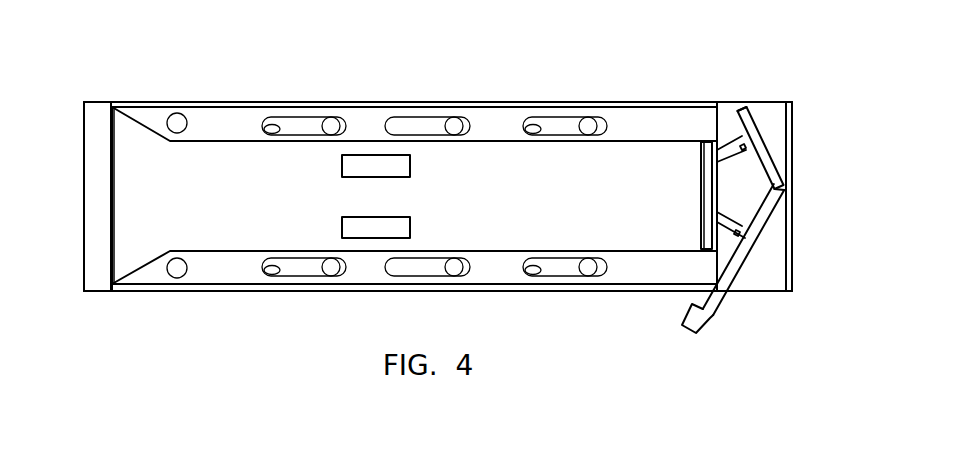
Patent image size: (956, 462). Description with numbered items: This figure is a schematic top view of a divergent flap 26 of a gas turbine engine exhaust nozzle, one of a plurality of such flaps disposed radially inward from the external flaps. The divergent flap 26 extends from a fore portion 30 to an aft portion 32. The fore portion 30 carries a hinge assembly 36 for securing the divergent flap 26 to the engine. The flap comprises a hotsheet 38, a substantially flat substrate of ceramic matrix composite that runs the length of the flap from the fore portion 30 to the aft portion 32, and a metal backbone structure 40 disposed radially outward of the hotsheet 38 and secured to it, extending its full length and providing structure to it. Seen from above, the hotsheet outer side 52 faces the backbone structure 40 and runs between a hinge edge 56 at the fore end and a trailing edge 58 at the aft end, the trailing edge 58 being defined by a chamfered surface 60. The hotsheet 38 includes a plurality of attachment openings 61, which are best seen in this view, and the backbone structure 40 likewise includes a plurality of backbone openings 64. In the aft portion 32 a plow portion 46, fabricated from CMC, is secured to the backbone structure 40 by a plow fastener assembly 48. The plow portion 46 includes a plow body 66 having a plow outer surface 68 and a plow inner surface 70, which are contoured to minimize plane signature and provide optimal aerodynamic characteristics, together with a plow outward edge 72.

The divergent flap 26 is at (495, 80).
The fore portion 30 is at (99, 309).
The aft portion 32 is at (704, 337).
The hinge assembly 36 is at (90, 167).
The hotsheet 38 is at (295, 293).
The backbone structure 40 is at (630, 152).
The plow portion 46 is at (783, 125).
The plow fastener assembly 48 is at (738, 210).
The hotsheet outer side 52 is at (370, 288).
The hinge edge 56 is at (120, 292).
The trailing edge 58 is at (786, 292).
The chamfered surface 60 is at (788, 247).
The attachment openings 61 is at (175, 113).
The backbone openings 64 is at (172, 140).
The plow body 66 is at (780, 191).
The plow outer surface 68 is at (768, 113).
The plow inner surface 70 is at (740, 117).
The plow outward edge 72 is at (740, 262).